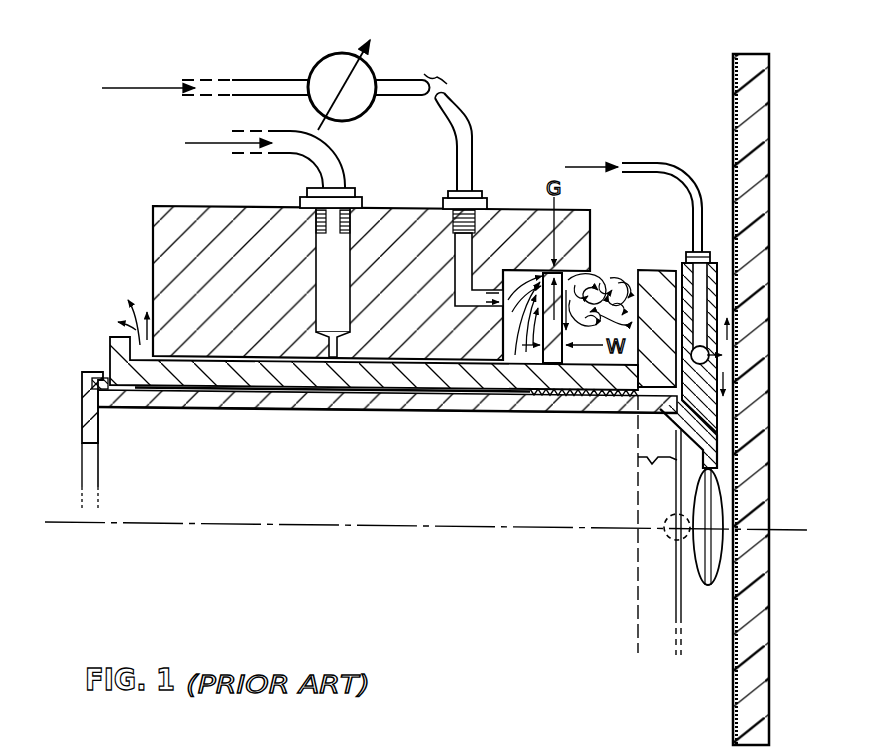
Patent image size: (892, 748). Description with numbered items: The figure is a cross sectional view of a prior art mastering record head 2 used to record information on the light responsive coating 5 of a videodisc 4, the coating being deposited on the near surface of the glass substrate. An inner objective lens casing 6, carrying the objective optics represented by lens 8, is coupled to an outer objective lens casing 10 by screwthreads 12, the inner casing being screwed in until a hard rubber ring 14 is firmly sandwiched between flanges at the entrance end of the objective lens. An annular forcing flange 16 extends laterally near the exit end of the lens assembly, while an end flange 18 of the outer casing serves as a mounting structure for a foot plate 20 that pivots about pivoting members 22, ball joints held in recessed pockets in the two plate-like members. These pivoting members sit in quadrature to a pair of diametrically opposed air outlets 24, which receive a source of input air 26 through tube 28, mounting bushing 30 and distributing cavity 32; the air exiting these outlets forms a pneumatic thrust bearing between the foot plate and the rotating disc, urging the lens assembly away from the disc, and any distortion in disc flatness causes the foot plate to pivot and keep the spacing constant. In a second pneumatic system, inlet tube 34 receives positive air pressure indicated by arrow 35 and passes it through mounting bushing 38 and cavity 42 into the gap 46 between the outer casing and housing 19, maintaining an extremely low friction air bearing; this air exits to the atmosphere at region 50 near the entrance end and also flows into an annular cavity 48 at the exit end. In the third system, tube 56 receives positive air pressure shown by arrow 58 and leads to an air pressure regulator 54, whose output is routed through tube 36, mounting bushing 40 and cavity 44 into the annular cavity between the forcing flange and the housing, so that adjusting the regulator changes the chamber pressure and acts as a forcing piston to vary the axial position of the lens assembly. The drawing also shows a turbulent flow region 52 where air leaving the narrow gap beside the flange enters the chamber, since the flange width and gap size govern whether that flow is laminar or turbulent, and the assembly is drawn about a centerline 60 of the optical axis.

The mastering record head 2 is at (131, 241).
The videodisc 4 is at (770, 115).
The light responsive coating 5 is at (735, 80).
The inner objective lens casing 6 is at (378, 410).
The lens 8 is at (718, 553).
The outer objective lens casing 10 is at (345, 372).
The screwthreads 12 is at (557, 402).
The hard rubber ring 14 is at (103, 370).
The annular forcing flange 16 is at (623, 323).
The end flange 18 is at (645, 553).
The housing 19 is at (195, 208).
The foot plate 20 is at (722, 262).
The pivoting members 22 is at (668, 518).
The air outlets 24 is at (678, 405).
The source of input air 26 is at (588, 164).
The tube 28 is at (643, 163).
The mounting bushing 30 is at (690, 262).
The distributing cavity 32 is at (703, 302).
The inlet tube 34 is at (346, 165).
The arrow 35 is at (208, 143).
The tube 36 is at (465, 118).
The mounting bushing 38 is at (358, 190).
The mounting bushing 40 is at (481, 191).
The cavity 42 is at (328, 263).
The cavity 44 is at (463, 258).
The gap 46 is at (237, 358).
The annular cavity 48 is at (527, 355).
The region 50 is at (128, 312).
The turbulent flow 52 is at (620, 275).
The air pressure regulator 54 is at (320, 53).
The tube 56 is at (262, 80).
The arrow 58 is at (150, 88).
The centerline 60 is at (390, 526).